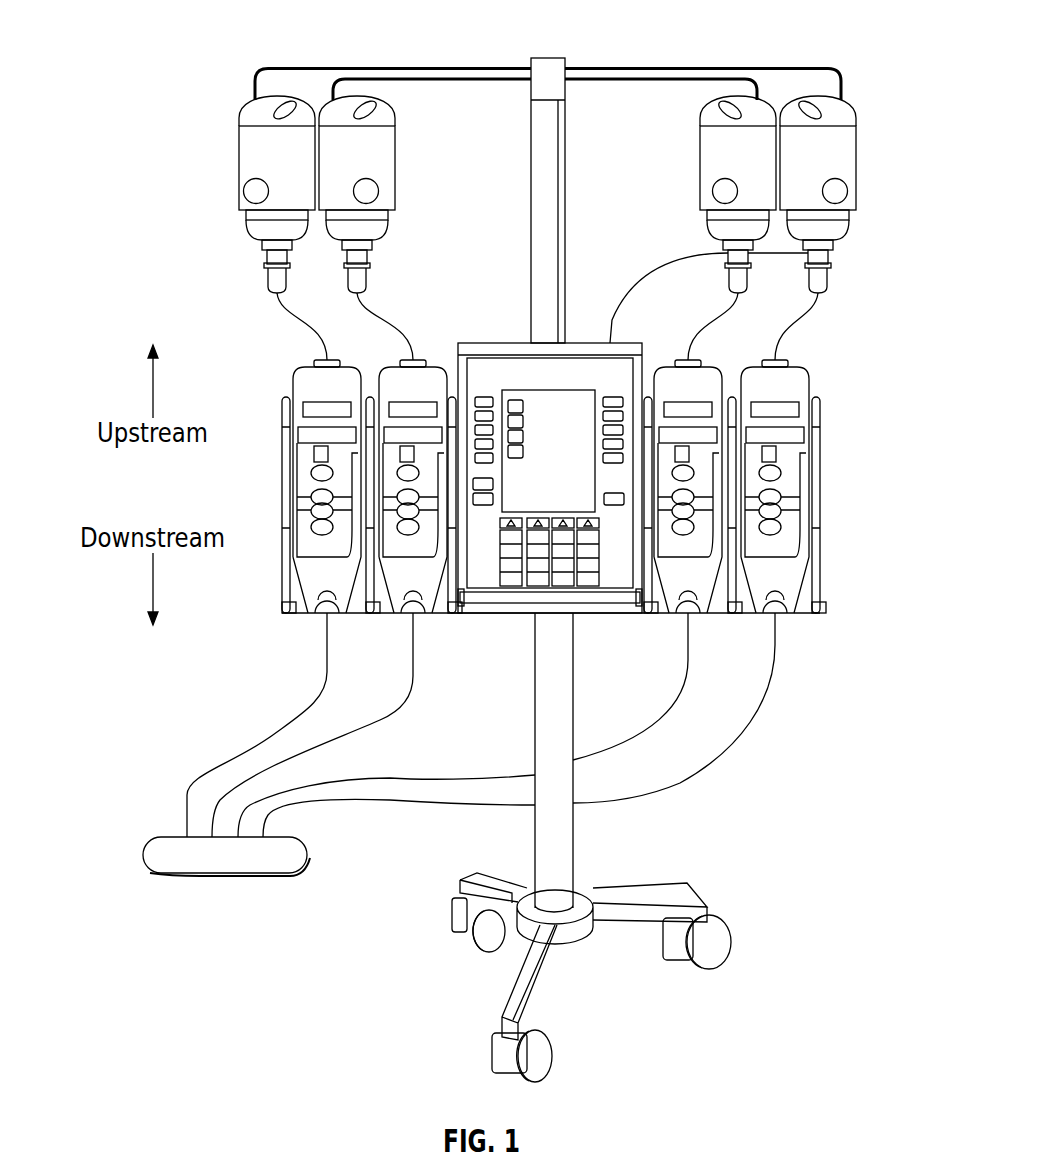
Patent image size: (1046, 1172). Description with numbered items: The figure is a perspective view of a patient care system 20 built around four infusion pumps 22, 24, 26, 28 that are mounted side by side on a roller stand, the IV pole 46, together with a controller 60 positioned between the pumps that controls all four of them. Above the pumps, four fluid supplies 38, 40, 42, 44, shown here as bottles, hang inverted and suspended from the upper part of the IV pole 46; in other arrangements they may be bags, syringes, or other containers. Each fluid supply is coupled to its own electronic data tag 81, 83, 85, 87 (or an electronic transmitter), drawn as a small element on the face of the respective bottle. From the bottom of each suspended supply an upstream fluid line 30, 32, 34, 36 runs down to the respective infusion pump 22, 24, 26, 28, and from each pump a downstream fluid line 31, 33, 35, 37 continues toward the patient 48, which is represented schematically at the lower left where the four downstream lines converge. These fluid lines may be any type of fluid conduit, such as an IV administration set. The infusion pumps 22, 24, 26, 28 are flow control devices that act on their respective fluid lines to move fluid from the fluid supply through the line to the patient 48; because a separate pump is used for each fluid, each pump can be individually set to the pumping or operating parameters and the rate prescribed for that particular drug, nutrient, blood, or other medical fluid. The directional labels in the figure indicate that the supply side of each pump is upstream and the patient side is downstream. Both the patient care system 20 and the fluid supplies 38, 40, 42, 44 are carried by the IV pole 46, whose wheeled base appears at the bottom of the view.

The patient care system 20 is at (231, 51).
The infusion pump 22 is at (808, 368).
The infusion pump 24 is at (662, 366).
The infusion pump 26 is at (396, 365).
The infusion pump 28 is at (303, 366).
The upstream fluid line 30 is at (820, 310).
The downstream fluid line 31 is at (778, 655).
The upstream fluid line 32 is at (732, 312).
The downstream fluid line 33 is at (684, 665).
The upstream fluid line 34 is at (368, 312).
The downstream fluid line 35 is at (400, 700).
The upstream fluid line 36 is at (287, 306).
The downstream fluid line 37 is at (320, 680).
The fluid supply 38 is at (858, 152).
The fluid supply 40 is at (700, 152).
The fluid supply 42 is at (398, 152).
The fluid supply 44 is at (240, 152).
The IV pole 46 is at (575, 843).
The patient 48 is at (143, 856).
The controller 60 is at (522, 342).
The electronic data tag 81 is at (847, 192).
The electronic data tag 83 is at (713, 195).
The electronic data tag 85 is at (380, 192).
The electronic data tag 87 is at (243, 195).